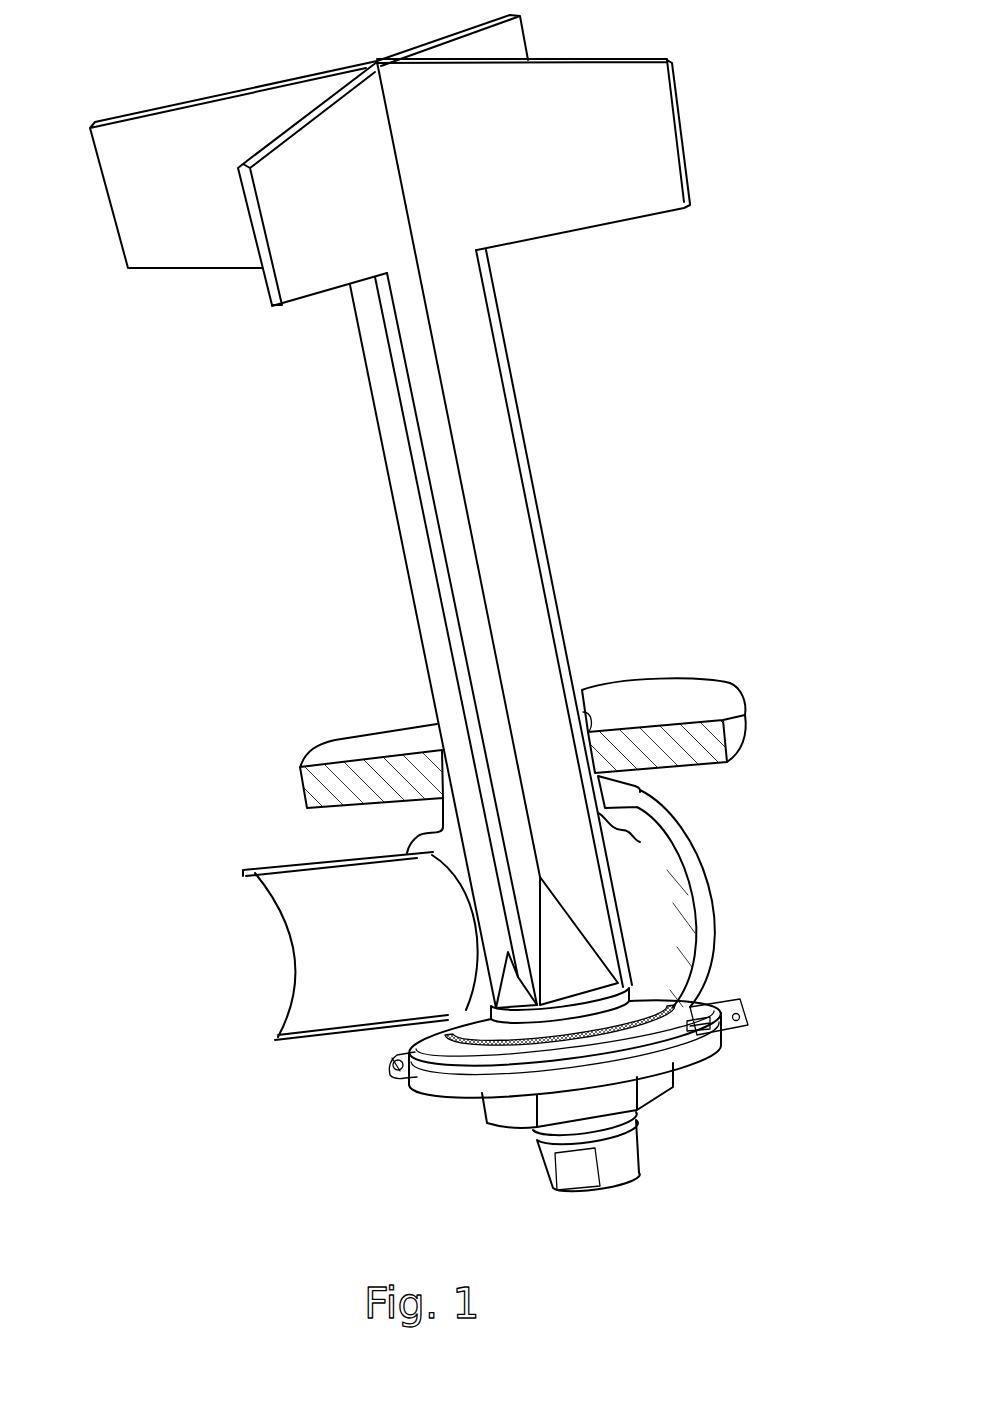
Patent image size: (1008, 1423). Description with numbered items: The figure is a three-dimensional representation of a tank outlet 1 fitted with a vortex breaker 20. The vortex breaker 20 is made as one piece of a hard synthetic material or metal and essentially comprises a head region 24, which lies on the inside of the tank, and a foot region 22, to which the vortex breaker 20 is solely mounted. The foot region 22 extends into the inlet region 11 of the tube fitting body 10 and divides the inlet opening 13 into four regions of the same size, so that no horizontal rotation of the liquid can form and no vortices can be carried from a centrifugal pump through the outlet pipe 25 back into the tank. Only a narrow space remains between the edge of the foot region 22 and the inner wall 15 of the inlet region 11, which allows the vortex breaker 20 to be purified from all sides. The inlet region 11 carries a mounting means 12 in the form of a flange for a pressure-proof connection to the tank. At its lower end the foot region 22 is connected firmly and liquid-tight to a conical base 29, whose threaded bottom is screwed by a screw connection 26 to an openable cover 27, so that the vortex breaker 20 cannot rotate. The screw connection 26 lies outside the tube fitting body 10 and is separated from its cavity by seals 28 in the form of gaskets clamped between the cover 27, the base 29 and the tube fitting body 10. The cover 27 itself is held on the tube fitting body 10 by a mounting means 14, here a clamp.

The tank outlet 1 is at (212, 505).
The tube fitting body 10 is at (667, 860).
The inlet region 11 is at (686, 696).
The mounting means 12 is at (710, 732).
The inlet opening 13 is at (580, 720).
The mounting means 14 is at (455, 1082).
The inner wall 15 is at (430, 743).
The vortex breaker 20 is at (483, 407).
The foot region 22 is at (498, 507).
The head region 24 is at (648, 147).
The outlet pipe 25 is at (277, 863).
The screw connection 26 is at (602, 1097).
The cover 27 is at (430, 1072).
The seal 28 is at (667, 1040).
The base 29 is at (562, 965).